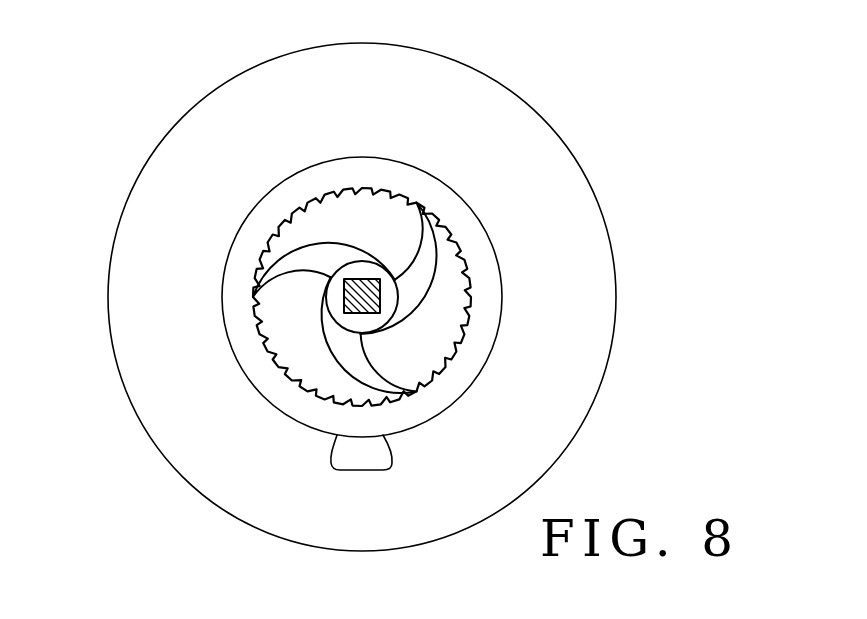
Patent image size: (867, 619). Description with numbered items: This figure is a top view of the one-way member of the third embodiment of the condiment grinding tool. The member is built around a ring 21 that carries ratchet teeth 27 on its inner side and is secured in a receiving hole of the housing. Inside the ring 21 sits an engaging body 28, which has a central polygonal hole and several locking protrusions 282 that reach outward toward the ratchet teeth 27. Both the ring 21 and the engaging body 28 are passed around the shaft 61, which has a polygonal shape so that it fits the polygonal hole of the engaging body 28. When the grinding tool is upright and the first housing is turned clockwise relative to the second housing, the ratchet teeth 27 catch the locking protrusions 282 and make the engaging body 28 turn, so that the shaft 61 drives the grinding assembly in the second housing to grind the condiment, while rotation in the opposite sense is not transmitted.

The ring 21 is at (278, 200).
The ratchet teeth 27 is at (516, 227).
The locking protrusions 282 is at (422, 290).
The engaging body 28 is at (397, 313).
The shaft 61 is at (370, 312).